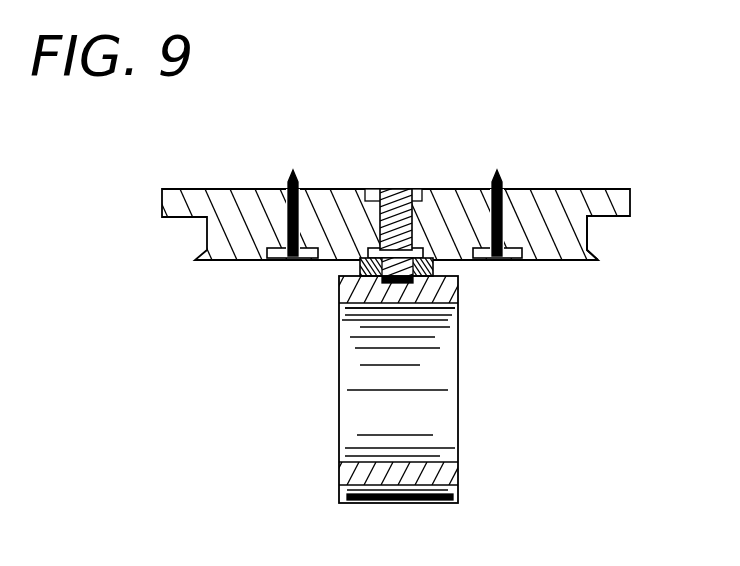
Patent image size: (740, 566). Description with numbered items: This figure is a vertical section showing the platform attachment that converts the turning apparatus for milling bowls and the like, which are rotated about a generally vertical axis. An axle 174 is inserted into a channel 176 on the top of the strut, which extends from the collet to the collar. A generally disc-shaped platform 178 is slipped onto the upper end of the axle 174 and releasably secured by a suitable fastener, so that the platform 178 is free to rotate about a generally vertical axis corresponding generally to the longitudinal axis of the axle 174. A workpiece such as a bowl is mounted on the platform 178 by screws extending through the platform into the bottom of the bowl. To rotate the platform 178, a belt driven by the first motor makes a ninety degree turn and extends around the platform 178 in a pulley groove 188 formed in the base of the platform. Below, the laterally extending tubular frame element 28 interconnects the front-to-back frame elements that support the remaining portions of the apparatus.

The laterally extending tubular frame element 28 is at (448, 503).
The axle 174 is at (393, 190).
The channel 176 is at (397, 300).
The platform 178 is at (210, 197).
The pulley groove 188 is at (587, 240).